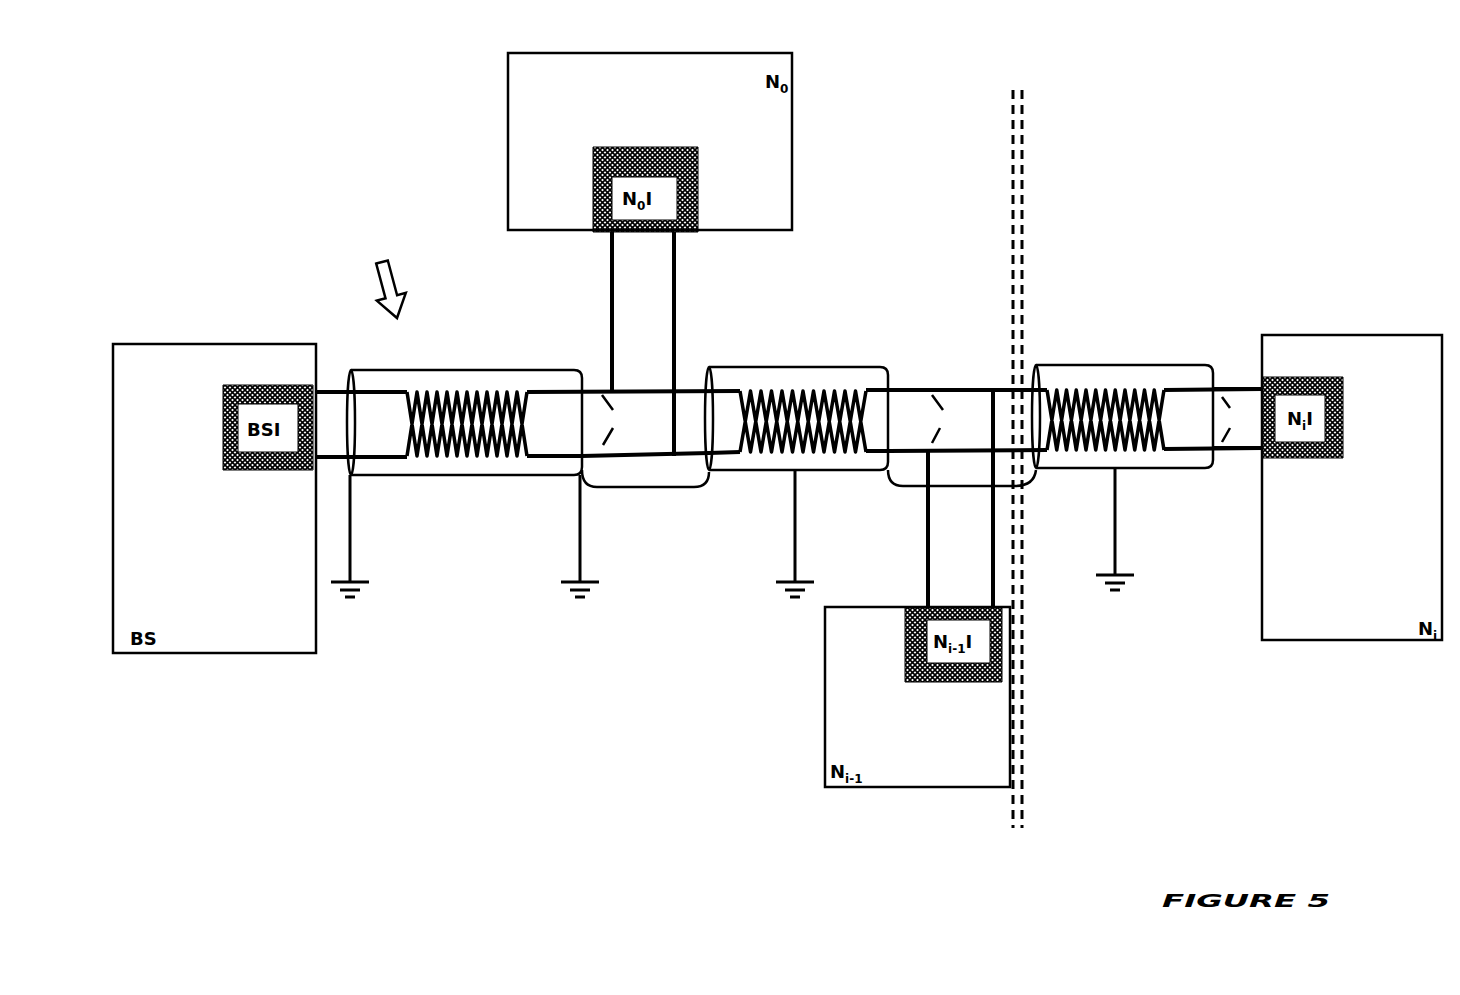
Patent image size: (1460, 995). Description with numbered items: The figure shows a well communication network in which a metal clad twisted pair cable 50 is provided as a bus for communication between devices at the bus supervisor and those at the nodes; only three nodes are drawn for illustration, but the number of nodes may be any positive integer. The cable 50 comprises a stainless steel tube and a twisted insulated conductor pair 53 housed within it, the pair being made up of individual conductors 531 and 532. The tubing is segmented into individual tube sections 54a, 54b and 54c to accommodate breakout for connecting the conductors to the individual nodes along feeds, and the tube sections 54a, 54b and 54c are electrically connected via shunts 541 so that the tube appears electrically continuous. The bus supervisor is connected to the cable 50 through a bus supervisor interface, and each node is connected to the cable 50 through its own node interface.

The metal clad twisted pair cable 50 is at (387, 281).
The twisted insulated conductor pair 53 is at (934, 420).
The conductor 531 is at (328, 662).
The conductor 532 is at (789, 571).
The tube section 54a is at (500, 476).
The tube section 54b is at (805, 365).
The tube section 54c is at (1167, 365).
The shunt 541 is at (895, 481).